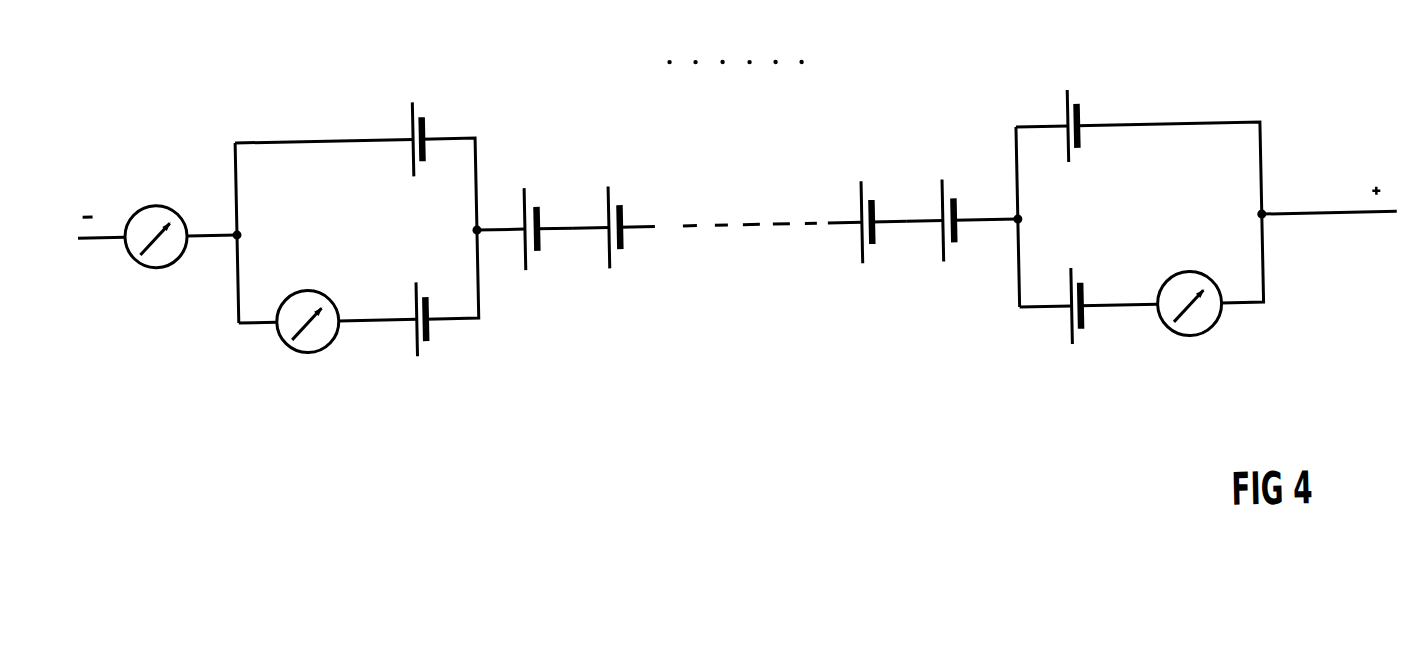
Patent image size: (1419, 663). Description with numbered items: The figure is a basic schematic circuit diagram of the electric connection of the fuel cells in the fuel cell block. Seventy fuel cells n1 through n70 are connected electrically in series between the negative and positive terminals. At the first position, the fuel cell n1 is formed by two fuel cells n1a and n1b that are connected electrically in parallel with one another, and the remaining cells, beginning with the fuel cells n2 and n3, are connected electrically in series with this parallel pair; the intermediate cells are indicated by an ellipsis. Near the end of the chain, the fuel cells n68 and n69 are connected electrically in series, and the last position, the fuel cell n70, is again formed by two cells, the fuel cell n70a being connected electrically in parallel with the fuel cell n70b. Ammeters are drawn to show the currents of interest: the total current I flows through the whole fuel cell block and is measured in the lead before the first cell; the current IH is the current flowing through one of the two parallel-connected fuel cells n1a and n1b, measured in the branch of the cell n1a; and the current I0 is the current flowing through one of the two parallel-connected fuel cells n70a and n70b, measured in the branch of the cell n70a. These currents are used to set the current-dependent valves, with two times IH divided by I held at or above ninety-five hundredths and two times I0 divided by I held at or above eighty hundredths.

The fuel cell n1 is at (356, 182).
The fuel cell n1a is at (410, 299).
The fuel cell n1b is at (409, 164).
The fuel cell n2 is at (523, 155).
The fuel cell n3 is at (612, 155).
The fuel cell n68 is at (866, 148).
The fuel cell n69 is at (961, 147).
The fuel cell n70 is at (1139, 166).
The fuel cell n70a is at (1079, 288).
The fuel cell n70b is at (1078, 152).
The total current I is at (153, 318).
The current through parallel-connected fuel cell IH is at (291, 372).
The current through parallel-connected fuel cell I0 is at (1171, 378).